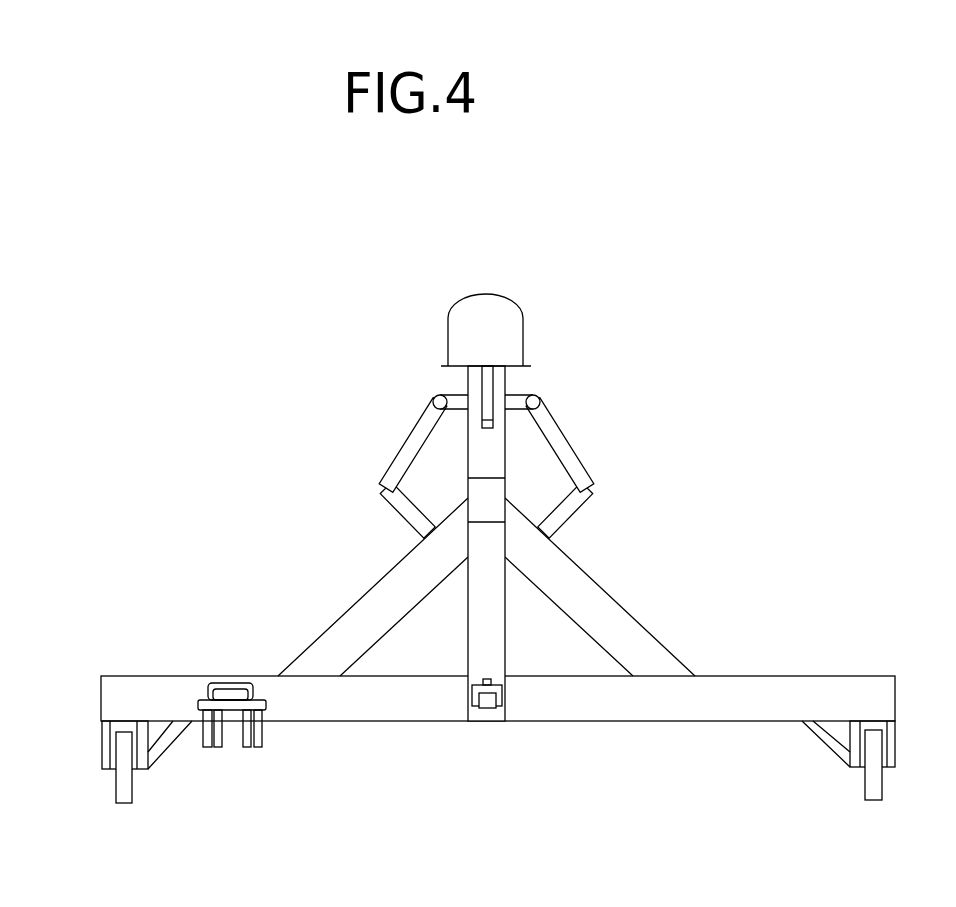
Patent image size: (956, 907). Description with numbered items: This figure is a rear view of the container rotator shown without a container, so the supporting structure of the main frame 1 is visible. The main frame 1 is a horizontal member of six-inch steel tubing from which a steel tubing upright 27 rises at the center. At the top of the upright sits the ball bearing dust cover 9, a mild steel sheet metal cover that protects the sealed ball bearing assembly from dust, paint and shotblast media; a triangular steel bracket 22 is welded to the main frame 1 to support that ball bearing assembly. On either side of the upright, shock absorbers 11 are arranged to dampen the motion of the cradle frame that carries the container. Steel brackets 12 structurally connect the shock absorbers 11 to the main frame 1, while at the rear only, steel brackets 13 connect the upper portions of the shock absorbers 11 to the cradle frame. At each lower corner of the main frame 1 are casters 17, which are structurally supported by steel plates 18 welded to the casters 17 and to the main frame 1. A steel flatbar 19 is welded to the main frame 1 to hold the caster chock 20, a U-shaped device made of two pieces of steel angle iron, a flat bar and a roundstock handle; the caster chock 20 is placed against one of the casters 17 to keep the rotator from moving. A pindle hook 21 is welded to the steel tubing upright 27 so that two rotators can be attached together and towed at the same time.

The main frame 1 is at (167, 676).
The ball bearing dust cover 9 is at (463, 298).
The shock absorbers 11 is at (411, 430).
The steel brackets 12 is at (388, 506).
The steel brackets 13 is at (528, 390).
The casters 17 is at (123, 805).
The steel plates 18 is at (168, 755).
The steel flatbar 19 is at (224, 712).
The caster chock 20 is at (258, 748).
The pindle hook 21 is at (490, 708).
The triangular steel bracket 22 is at (493, 425).
The steel tubing upright 27 is at (495, 630).